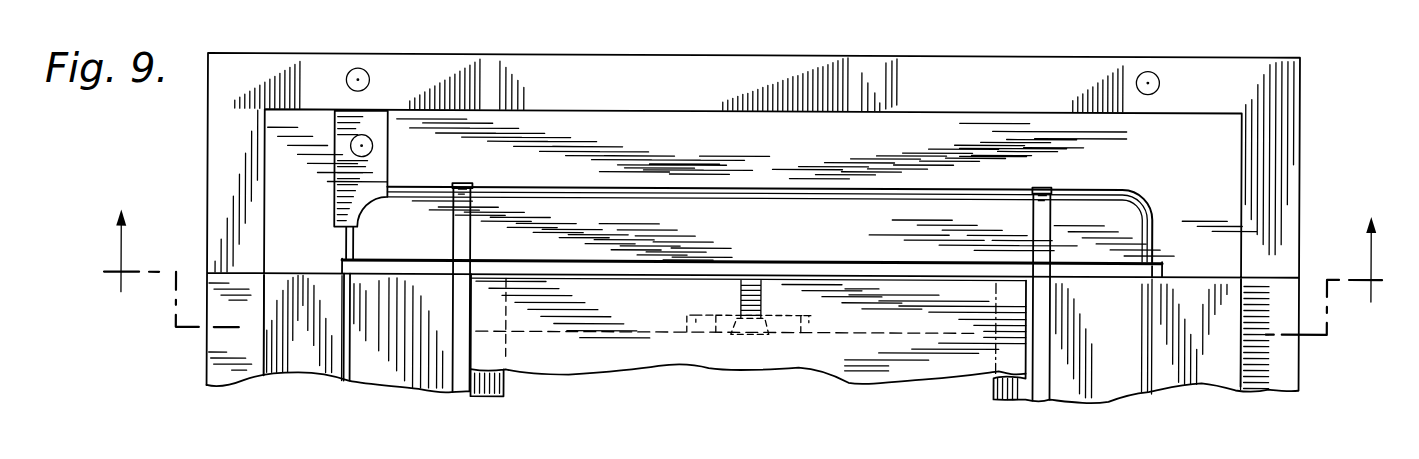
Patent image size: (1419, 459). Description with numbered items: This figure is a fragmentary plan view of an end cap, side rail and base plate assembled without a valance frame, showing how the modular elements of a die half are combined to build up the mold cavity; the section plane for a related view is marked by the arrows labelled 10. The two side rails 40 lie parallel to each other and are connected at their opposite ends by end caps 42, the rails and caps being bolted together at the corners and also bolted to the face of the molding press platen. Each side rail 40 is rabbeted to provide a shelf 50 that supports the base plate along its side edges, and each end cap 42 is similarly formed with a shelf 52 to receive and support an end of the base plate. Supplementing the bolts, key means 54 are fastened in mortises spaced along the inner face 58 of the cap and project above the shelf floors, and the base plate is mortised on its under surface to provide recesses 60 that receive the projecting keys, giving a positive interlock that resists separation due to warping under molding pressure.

The section line / panel assembly 10 is at (746, 269).
The side rail 40 is at (300, 357).
The end cap 42 is at (977, 68).
The shelf 50 is at (484, 397).
The shelf 52 is at (606, 330).
The key means 54 is at (802, 318).
The inner face 58 is at (881, 332).
The recess 60 is at (707, 312).